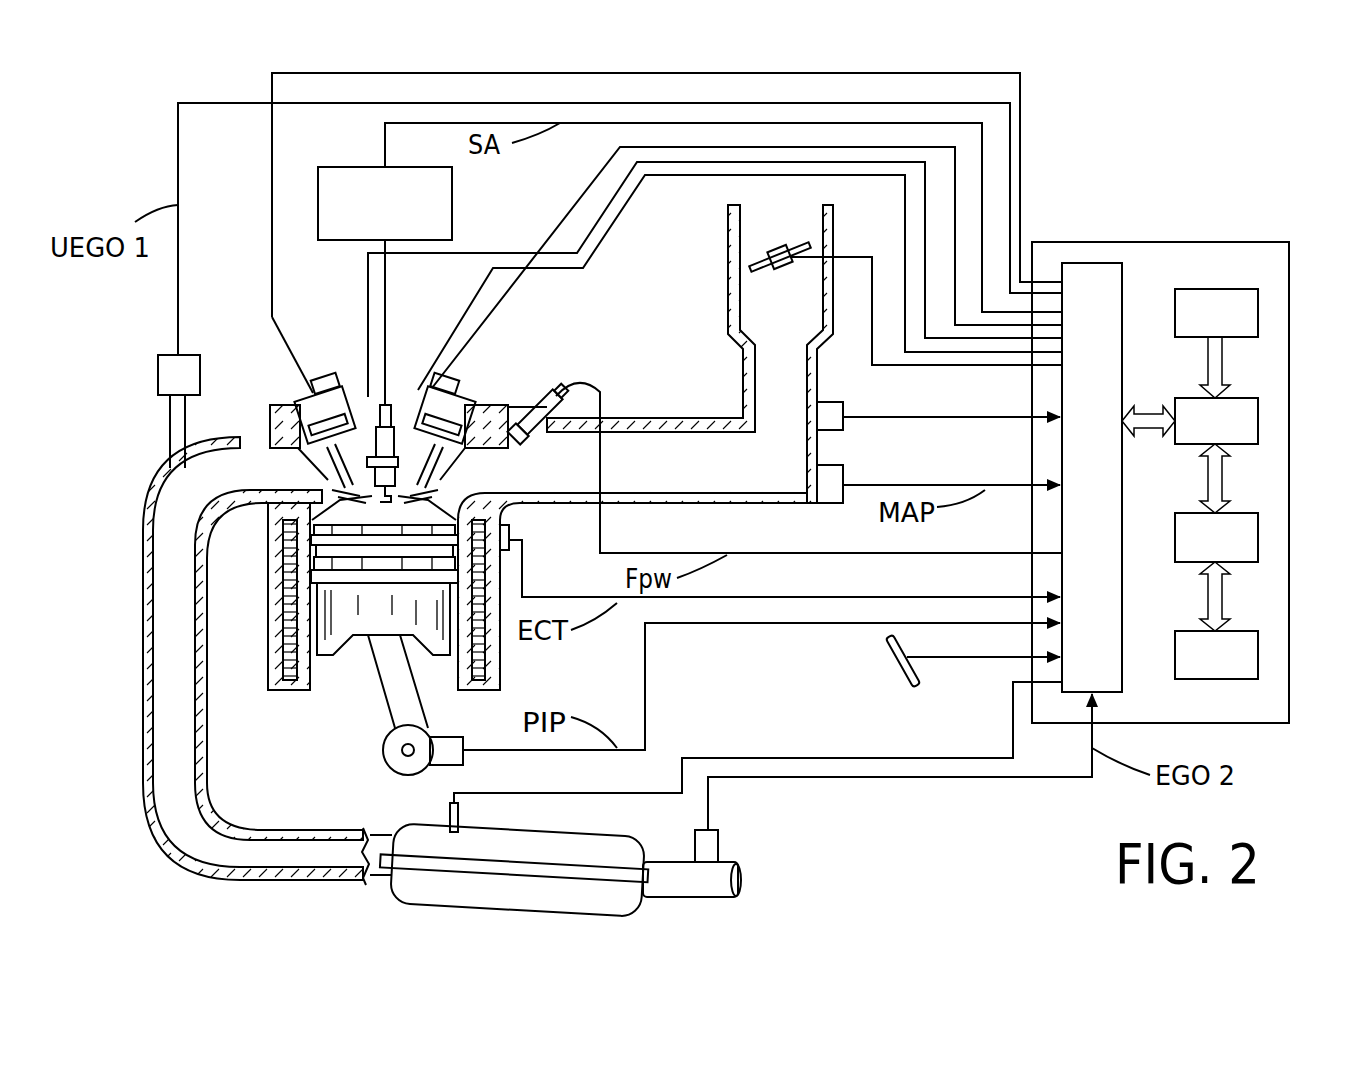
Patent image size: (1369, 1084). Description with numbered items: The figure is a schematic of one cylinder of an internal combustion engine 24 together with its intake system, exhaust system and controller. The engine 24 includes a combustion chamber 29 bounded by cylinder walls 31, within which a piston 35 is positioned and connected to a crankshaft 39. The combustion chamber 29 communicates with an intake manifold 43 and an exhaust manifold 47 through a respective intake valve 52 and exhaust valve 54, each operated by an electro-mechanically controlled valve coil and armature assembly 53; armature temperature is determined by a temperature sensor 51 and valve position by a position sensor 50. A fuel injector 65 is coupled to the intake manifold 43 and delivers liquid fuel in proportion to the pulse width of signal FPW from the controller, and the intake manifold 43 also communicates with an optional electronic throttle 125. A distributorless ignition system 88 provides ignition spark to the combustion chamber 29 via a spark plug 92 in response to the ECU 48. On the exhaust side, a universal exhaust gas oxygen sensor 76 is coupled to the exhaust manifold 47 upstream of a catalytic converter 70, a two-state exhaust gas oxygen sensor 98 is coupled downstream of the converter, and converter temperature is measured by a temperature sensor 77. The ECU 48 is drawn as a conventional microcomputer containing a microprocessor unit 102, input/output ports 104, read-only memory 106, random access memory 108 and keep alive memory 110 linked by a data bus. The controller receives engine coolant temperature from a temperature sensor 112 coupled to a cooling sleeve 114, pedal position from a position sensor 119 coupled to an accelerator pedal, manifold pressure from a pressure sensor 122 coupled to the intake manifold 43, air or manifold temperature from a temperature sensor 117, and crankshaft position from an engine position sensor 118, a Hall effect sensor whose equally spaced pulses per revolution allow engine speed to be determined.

The internal combustion engine 24 is at (265, 398).
The combustion chamber 29 is at (378, 512).
The cylinder walls 31 is at (310, 675).
The piston 35 is at (363, 637).
The crankshaft 39 is at (384, 750).
The intake manifold 43 is at (750, 484).
The exhaust manifold 47 is at (173, 550).
The ECU 48 is at (1205, 242).
The position sensor 50 is at (347, 382).
The temperature sensor 51 is at (419, 393).
The intake valve 52 is at (432, 488).
The valve coil and armature assembly 53 is at (316, 385).
The exhaust valve 54 is at (342, 488).
The fuel injector 65 is at (542, 390).
The catalytic converter 70 is at (490, 900).
The universal exhaust gas oxygen (UEGO) sensor 76 is at (158, 380).
The temperature sensor 77 is at (448, 817).
The distributorless ignition system 88 is at (455, 222).
The spark plug 92 is at (390, 398).
The two-state exhaust gas oxygen sensor 98 is at (730, 828).
The microprocessor unit (CPU) 102 is at (1258, 430).
The input/output ports 104 is at (1122, 305).
The read-only memory 106 is at (1258, 318).
The random access memory 108 is at (1258, 540).
The keep alive memory 110 is at (1258, 660).
The temperature sensor 112 is at (508, 527).
The cooling sleeve 114 is at (290, 698).
The temperature sensor 117 is at (848, 402).
The engine position sensor 118 is at (460, 765).
The position sensor 119 is at (886, 667).
The pressure sensor 122 is at (842, 463).
The electronic throttle 125 is at (768, 247).